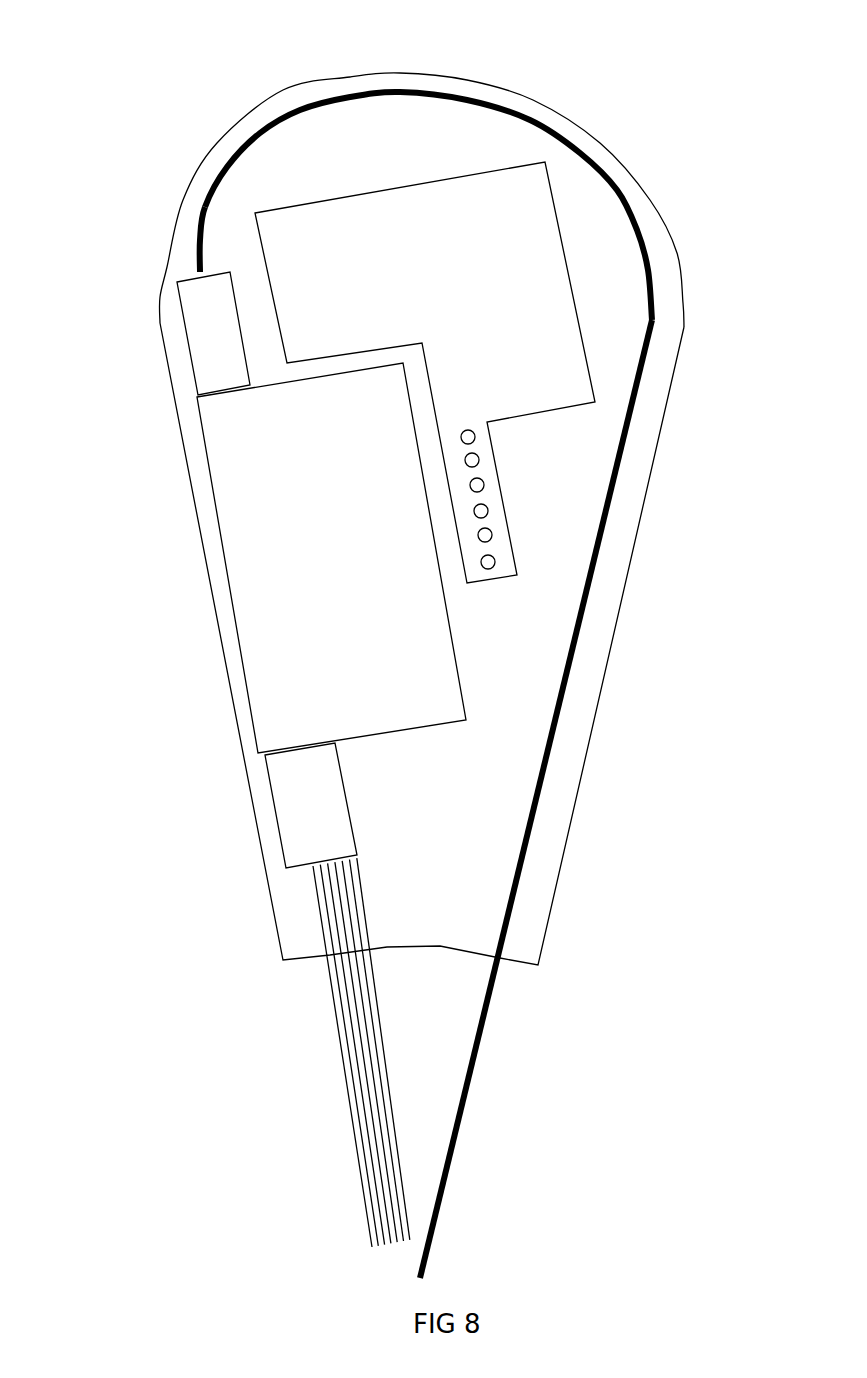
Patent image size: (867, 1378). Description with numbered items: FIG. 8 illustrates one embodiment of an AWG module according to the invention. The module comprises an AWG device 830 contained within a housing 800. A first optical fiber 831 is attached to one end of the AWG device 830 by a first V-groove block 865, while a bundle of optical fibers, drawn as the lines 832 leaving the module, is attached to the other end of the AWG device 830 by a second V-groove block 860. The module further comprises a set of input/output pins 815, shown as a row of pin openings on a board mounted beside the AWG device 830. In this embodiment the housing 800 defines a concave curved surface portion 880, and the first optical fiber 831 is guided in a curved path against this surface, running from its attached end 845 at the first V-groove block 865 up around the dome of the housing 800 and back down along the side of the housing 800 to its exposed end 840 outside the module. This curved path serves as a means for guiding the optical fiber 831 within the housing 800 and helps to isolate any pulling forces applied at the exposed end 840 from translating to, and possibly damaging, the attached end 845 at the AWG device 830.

The housing 800 is at (433, 516).
The input/output pins 815 is at (483, 493).
The AWG device 830 is at (262, 603).
The first optical fiber 831 is at (432, 88).
The cable 832 is at (353, 1073).
The exposed end 840 is at (477, 1077).
The attached end 845 is at (197, 262).
The second V-groove block 860 is at (300, 812).
The first V-groove block 865 is at (208, 375).
The concave curved surface portion 880 is at (560, 110).